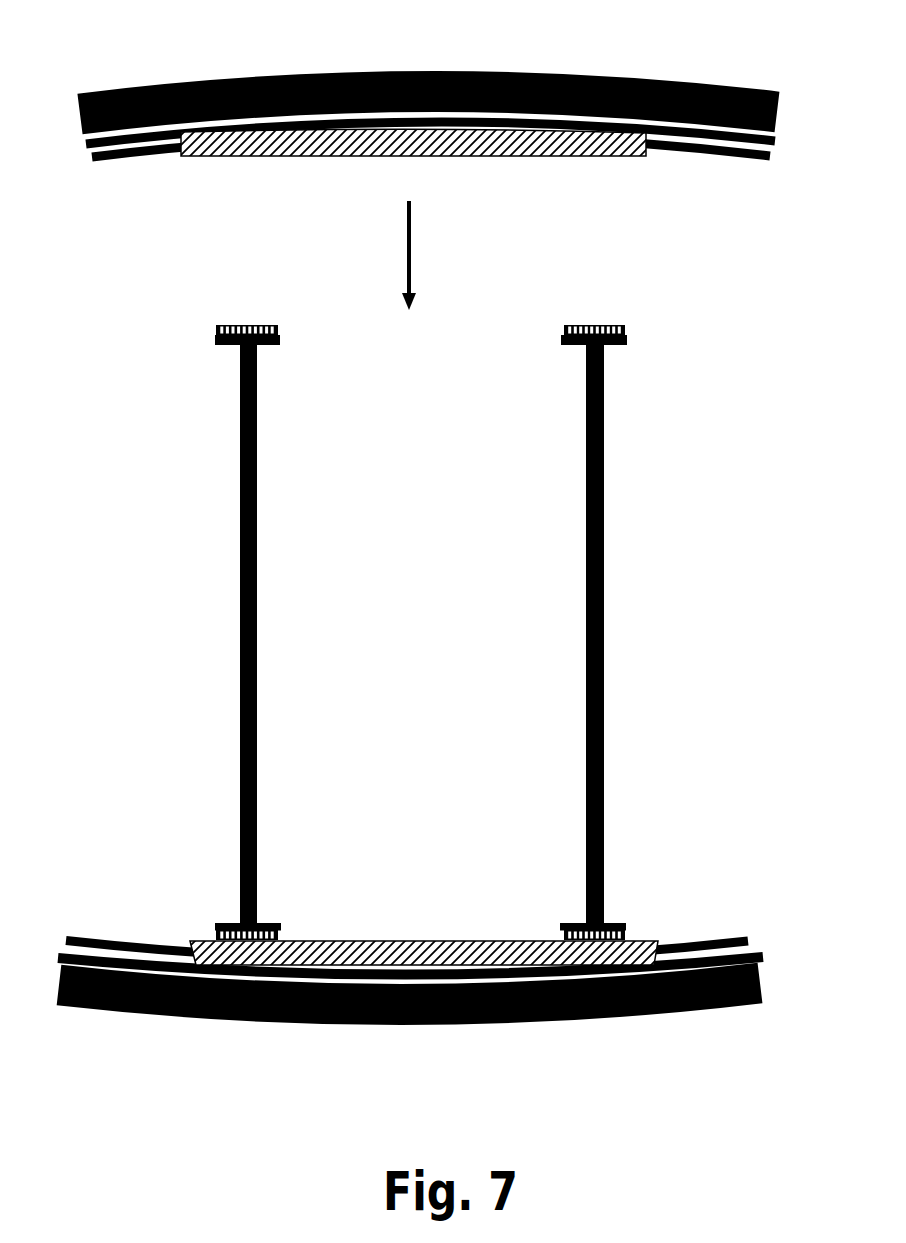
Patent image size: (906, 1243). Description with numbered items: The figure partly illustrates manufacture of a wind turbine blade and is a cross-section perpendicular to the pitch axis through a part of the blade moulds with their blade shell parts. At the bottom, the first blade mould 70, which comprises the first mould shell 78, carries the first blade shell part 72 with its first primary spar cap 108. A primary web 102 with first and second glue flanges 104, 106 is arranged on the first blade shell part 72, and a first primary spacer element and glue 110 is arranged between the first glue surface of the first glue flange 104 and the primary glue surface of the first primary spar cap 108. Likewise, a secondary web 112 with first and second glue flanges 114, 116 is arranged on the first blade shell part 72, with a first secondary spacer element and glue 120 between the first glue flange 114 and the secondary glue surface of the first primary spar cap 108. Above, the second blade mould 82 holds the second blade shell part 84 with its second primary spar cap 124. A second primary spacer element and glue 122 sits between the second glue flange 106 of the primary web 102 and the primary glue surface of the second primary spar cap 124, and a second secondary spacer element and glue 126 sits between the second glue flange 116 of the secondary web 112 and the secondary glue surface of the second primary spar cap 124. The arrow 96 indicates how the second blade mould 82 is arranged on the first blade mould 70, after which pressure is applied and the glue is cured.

The second blade mould 82 is at (230, 65).
The second blade shell part 84 is at (128, 137).
The second primary spar cap 124 is at (588, 150).
The arrow 96 is at (400, 265).
The second primary spacer element and glue 122 is at (232, 318).
The second glue flange of primary web 106 is at (257, 333).
The primary web 102 is at (250, 583).
The first glue flange of primary web 104 is at (255, 915).
The first primary spacer element and glue 110 is at (210, 930).
The second secondary spacer element and glue 126 is at (588, 318).
The second glue flange of secondary web 116 is at (612, 335).
The secondary web 112 is at (598, 498).
The first glue flange of secondary web 114 is at (617, 918).
The first secondary spacer element and glue 120 is at (557, 930).
The first primary spar cap 108 is at (410, 932).
The first blade shell part 72 is at (710, 930).
The first blade mould 70 is at (232, 1012).
The first mould shell 78 is at (410, 1034).